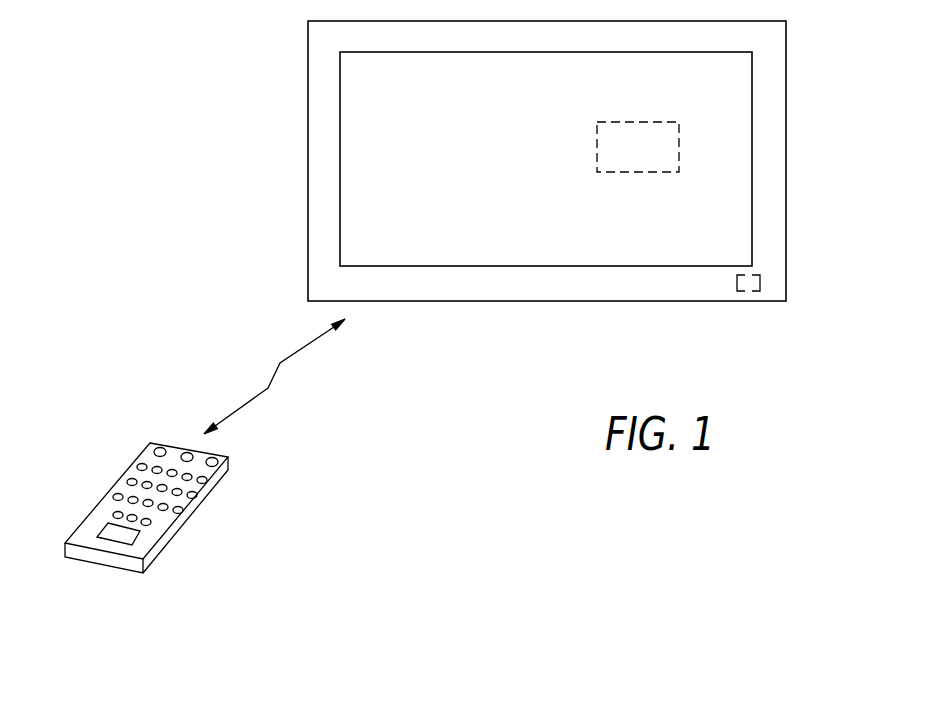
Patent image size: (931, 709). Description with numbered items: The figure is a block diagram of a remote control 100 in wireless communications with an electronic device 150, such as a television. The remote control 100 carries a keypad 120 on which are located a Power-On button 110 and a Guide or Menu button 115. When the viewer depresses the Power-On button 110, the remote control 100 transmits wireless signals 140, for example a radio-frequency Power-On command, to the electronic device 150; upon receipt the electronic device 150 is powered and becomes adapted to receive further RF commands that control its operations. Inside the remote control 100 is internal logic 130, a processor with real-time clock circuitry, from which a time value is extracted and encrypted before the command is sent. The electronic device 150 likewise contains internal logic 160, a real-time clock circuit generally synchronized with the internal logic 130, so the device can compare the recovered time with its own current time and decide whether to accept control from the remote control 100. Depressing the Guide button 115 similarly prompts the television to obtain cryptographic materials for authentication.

The remote control 100 is at (157, 492).
The Power-On button 110 is at (160, 452).
The Guide (or Menu) button 115 is at (118, 497).
The keypad 120 is at (137, 467).
The internal logic 130 is at (145, 541).
The wireless signals 140 is at (308, 344).
The electronic device 150 is at (786, 113).
The internal logic 160 is at (679, 146).